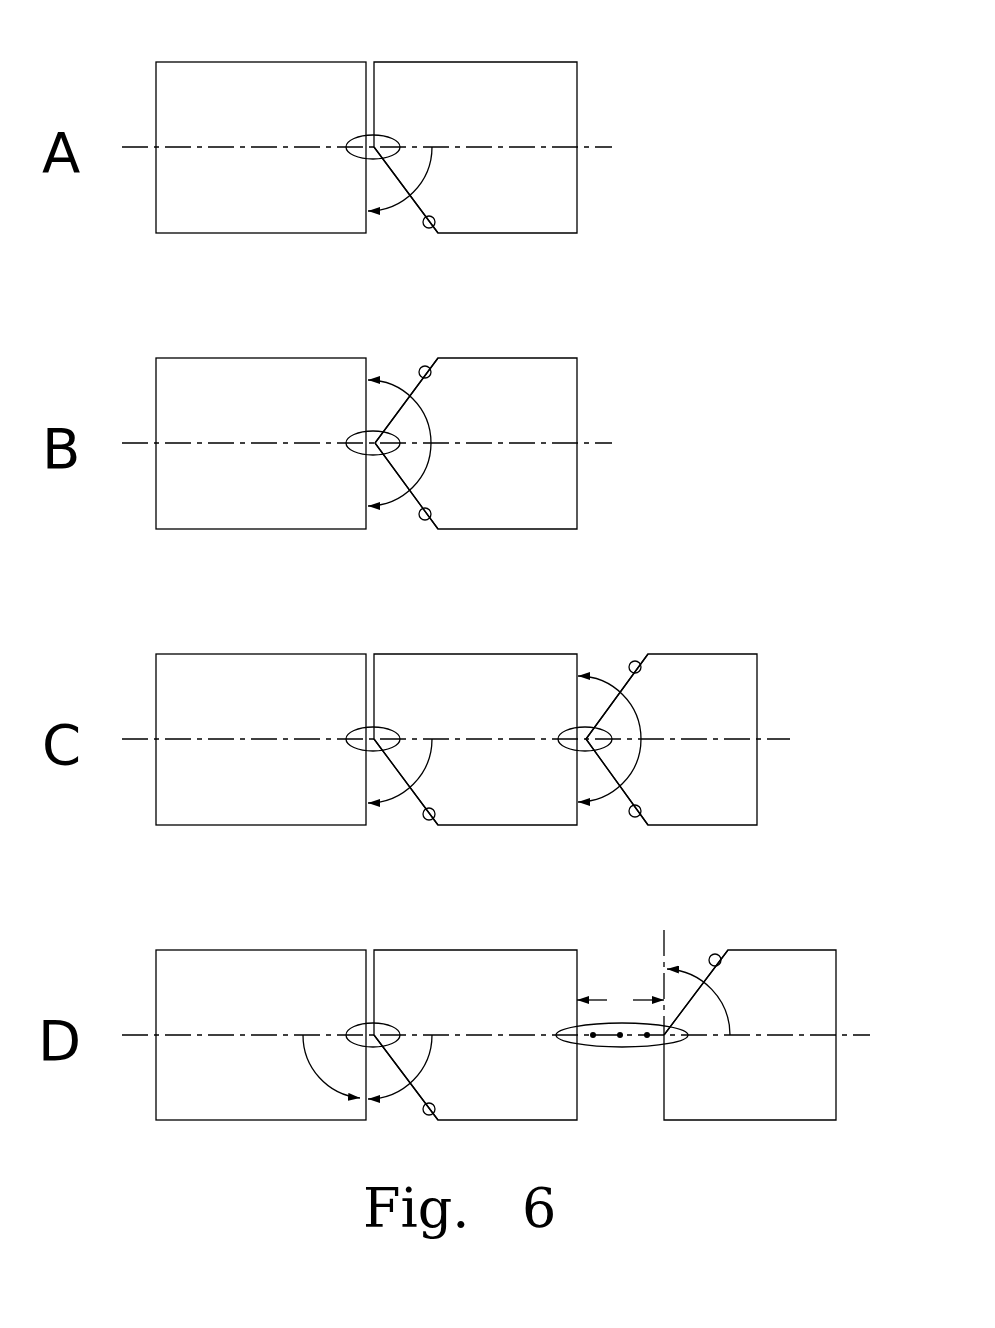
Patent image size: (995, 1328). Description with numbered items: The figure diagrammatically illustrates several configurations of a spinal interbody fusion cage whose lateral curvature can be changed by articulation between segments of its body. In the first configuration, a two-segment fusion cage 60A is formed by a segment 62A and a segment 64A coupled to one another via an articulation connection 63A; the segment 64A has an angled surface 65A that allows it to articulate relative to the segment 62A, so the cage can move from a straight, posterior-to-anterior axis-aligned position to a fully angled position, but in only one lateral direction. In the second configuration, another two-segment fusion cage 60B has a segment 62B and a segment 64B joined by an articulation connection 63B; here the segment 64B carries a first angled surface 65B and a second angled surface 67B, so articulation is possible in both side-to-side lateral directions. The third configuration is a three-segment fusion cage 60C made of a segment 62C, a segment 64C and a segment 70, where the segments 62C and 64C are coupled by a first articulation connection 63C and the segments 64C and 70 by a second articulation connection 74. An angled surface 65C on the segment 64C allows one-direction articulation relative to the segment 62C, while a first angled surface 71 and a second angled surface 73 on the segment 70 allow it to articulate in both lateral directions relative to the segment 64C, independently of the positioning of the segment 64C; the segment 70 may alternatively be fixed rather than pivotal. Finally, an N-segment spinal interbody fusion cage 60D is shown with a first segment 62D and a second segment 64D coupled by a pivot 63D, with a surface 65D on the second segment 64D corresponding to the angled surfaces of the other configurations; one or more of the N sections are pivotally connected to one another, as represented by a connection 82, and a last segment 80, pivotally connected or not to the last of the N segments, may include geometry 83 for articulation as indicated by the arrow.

In FIG. 6A, the 2-segment fusion cage 60A is at (135, 94).
In FIG. 6A, the segment 62A is at (262, 78).
In FIG. 6A, the segment 64A is at (480, 78).
In FIG. 6A, the articulation connection 63A is at (368, 140).
In FIG. 6A, the angled surface 65A is at (434, 217).
In FIG. 6B, the 2-segment fusion cage 60B is at (135, 390).
In FIG. 6B, the segment 62B is at (262, 374).
In FIG. 6B, the segment 64B is at (480, 374).
In FIG. 6B, the articulation connection 63B is at (368, 436).
In FIG. 6B, the first angled surface 65B is at (431, 510).
In FIG. 6B, the second angled surface 67B is at (431, 378).
In FIG. 6C, the 3-segment fusion cage 60C is at (135, 686).
In FIG. 6C, the segment 62C is at (262, 670).
In FIG. 6C, the segment 64C is at (480, 670).
In FIG. 6C, the first articulation connection 63C is at (368, 732).
In FIG. 6C, the angled surface 65C is at (434, 809).
In FIG. 6C, the segment 70 is at (725, 668).
In FIG. 6C, the first angled surface 71 is at (641, 806).
In FIG. 6C, the second angled surface 73 is at (641, 673).
In FIG. 6C, the second articulation connection 74 is at (578, 732).
In FIG. 6D, the N-segment spinal interbody fusion cage 60D is at (135, 982).
In FIG. 6D, the first segment 62D is at (262, 966).
In FIG. 6D, the second segment 64D is at (480, 966).
In FIG. 6D, the pivot 63D is at (368, 1028).
In FIG. 6D, the stop surface 65D is at (434, 1105).
In FIG. 6D, the last segment 80 is at (806, 962).
In FIG. 6D, the connection 82 is at (623, 1050).
In FIG. 6D, the geometry 83 is at (721, 966).